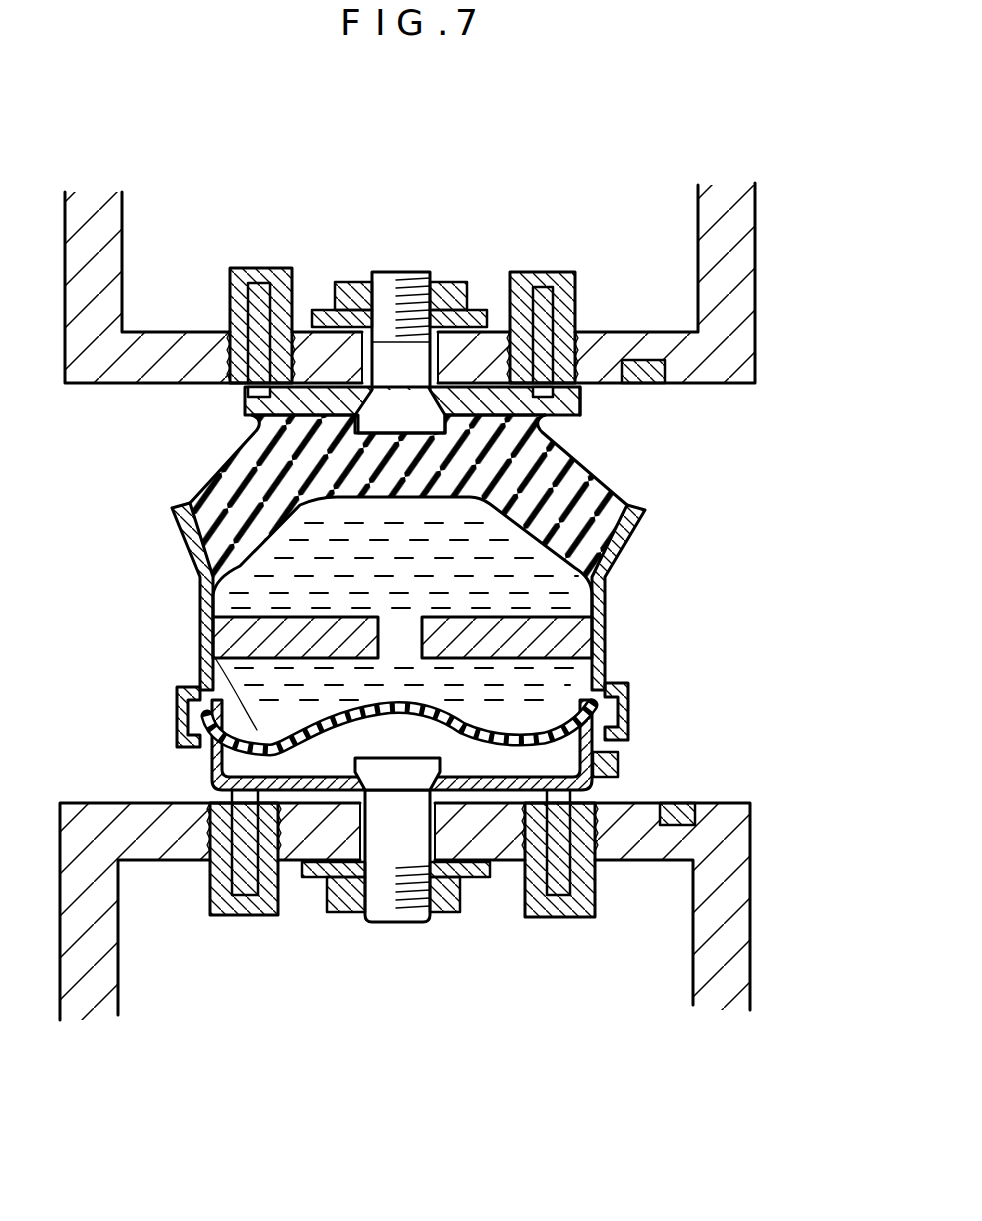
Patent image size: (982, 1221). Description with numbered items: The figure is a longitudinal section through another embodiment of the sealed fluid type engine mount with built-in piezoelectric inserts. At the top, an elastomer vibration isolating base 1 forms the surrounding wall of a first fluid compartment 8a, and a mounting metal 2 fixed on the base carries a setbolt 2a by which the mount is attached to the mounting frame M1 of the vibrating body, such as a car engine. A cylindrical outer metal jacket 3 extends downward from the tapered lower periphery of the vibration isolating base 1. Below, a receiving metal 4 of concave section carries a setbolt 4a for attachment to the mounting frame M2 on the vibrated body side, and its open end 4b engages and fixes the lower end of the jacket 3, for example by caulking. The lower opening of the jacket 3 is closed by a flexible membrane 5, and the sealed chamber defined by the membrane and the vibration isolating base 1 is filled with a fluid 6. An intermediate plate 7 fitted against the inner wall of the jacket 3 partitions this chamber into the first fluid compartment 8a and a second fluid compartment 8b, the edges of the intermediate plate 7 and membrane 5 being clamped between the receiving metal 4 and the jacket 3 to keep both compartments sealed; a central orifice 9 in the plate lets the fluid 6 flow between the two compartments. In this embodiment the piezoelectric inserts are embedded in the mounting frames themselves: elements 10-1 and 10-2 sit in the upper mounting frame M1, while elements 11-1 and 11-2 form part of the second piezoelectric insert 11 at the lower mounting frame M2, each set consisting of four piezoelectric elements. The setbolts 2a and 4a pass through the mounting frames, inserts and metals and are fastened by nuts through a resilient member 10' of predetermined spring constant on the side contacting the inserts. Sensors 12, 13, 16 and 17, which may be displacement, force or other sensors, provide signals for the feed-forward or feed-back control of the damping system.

The vibration isolating base 1 is at (572, 488).
The mounting metal 2 is at (247, 403).
The setbolt 2a is at (400, 297).
The outer metal jacket 3 is at (187, 545).
The receiving metal 4 is at (203, 793).
The setbolt 4a is at (407, 920).
The open end 4b is at (180, 727).
The membrane 5 is at (291, 745).
The fluid 6 is at (215, 752).
The intermediate plate 7 is at (247, 615).
The first fluid compartment 8a is at (247, 567).
The second fluid compartment 8b is at (247, 677).
The orifice 9 is at (403, 640).
The resilient member 10' is at (396, 261).
The piezoelectric insert 10-1 is at (547, 290).
The piezoelectric insert 10-2 is at (253, 268).
The second piezoelectric insert 11 is at (343, 905).
The piezoelectric insert 11-1 is at (557, 920).
The piezoelectric insert 11-2 is at (242, 917).
The sensor 12 is at (650, 383).
The sensor 13 is at (680, 803).
The sensor 16 is at (583, 403).
The sensor 17 is at (620, 760).
The mounting frame M1 is at (740, 232).
The mounting frame M2 is at (737, 927).